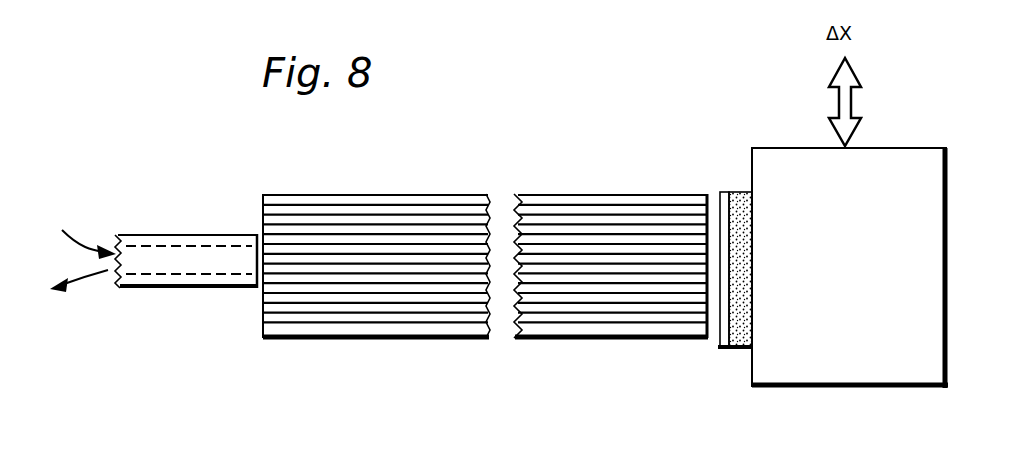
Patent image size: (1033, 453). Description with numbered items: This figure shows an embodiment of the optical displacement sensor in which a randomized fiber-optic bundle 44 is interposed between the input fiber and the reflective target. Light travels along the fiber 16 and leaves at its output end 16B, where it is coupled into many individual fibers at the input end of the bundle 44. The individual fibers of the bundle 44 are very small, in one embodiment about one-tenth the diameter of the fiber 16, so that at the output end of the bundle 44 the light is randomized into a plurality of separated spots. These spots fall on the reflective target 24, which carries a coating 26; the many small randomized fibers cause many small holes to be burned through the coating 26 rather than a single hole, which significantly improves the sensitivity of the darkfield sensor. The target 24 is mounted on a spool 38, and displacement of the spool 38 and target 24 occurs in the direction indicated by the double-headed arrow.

The fiber 16 is at (150, 234).
The output end of fiber 16B is at (256, 289).
The randomized fiber-optic bundle 44 is at (458, 186).
The reflective target 24 is at (738, 180).
The coating 26 is at (722, 349).
The spool 38 is at (841, 388).